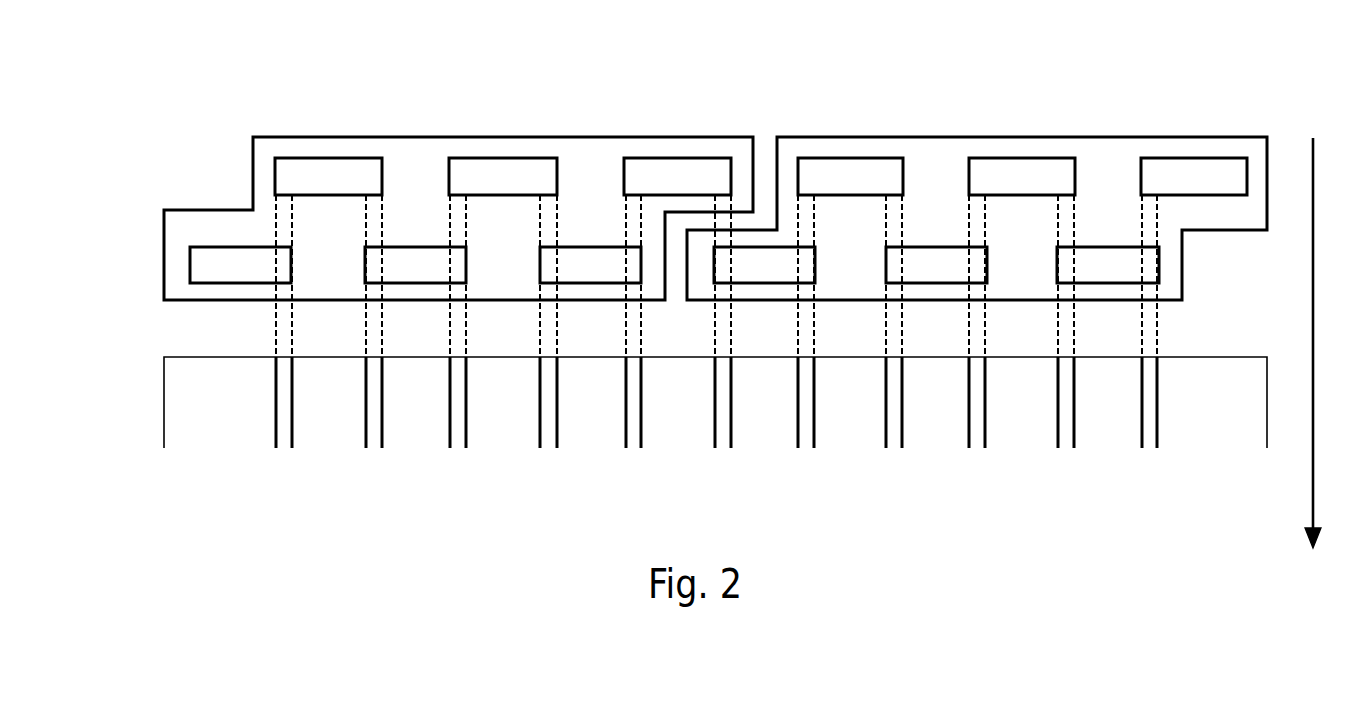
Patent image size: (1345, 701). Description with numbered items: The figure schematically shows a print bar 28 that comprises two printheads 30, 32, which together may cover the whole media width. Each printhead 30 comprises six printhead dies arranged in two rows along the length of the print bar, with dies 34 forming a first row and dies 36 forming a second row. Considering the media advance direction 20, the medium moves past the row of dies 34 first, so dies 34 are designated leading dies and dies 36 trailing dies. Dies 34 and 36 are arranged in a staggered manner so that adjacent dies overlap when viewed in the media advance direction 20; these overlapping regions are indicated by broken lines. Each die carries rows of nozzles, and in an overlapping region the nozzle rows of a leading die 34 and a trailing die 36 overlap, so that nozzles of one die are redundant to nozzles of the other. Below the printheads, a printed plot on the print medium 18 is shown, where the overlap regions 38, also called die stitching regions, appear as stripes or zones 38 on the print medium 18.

The print medium 18 is at (164, 433).
The media advance direction 20 is at (1312, 498).
The print bar 28 is at (156, 138).
The printhead 30 is at (417, 155).
The printhead 32 is at (942, 157).
The leading dies 34 is at (330, 158).
The trailing dies 36 is at (243, 284).
The overlap regions 38 is at (275, 433).